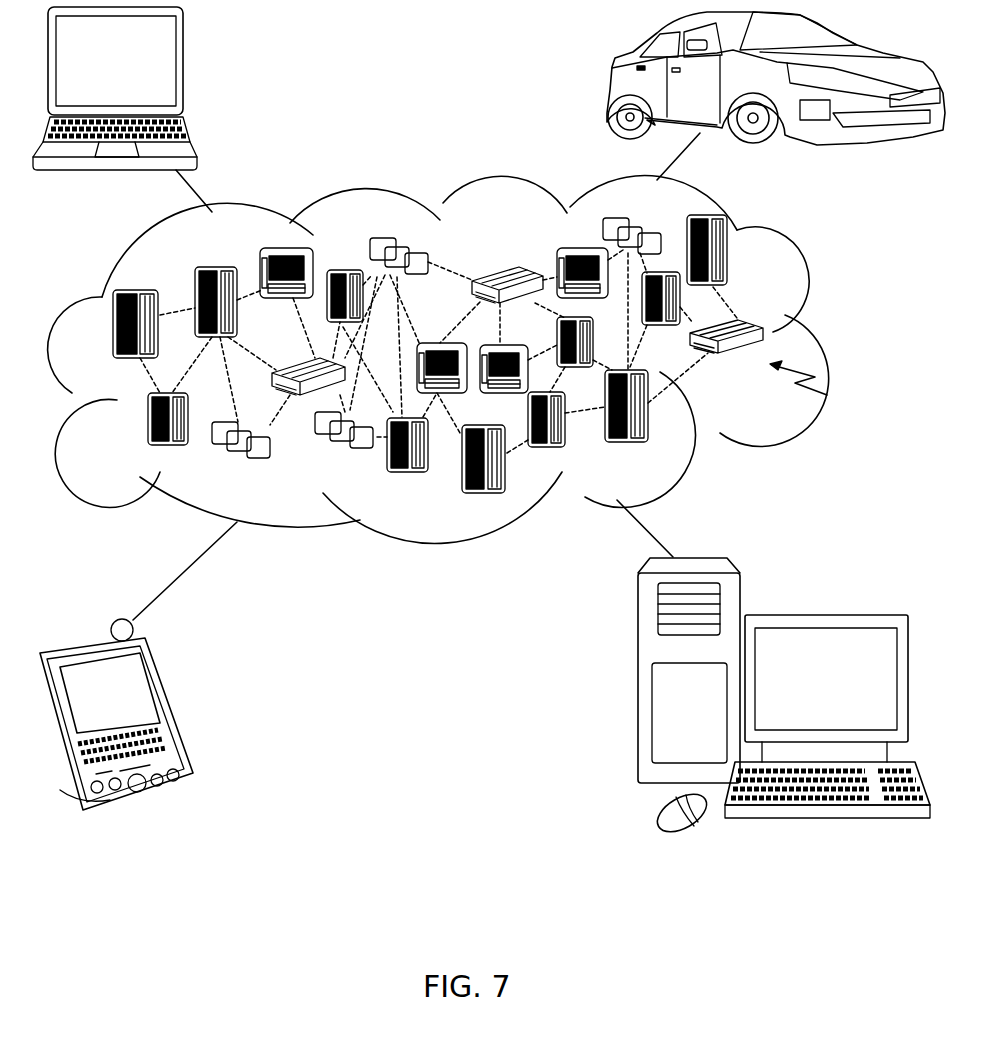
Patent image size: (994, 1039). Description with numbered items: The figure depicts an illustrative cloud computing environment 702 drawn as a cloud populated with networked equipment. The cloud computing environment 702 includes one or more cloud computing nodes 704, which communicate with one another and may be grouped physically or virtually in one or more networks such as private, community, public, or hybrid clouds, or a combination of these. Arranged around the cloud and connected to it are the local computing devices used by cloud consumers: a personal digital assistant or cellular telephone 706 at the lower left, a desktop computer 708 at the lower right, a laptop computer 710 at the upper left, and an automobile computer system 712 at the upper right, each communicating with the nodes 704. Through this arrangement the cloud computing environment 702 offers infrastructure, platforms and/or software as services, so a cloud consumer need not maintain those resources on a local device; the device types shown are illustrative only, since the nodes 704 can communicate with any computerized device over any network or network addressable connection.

The cloud computing environment 702 is at (827, 330).
The cloud computing nodes 704 is at (829, 395).
The personal digital assistant (PDA) or cellular telephone 706 is at (170, 705).
The desktop computer 708 is at (835, 593).
The laptop computer 710 is at (183, 70).
The automobile computer system 712 is at (610, 85).